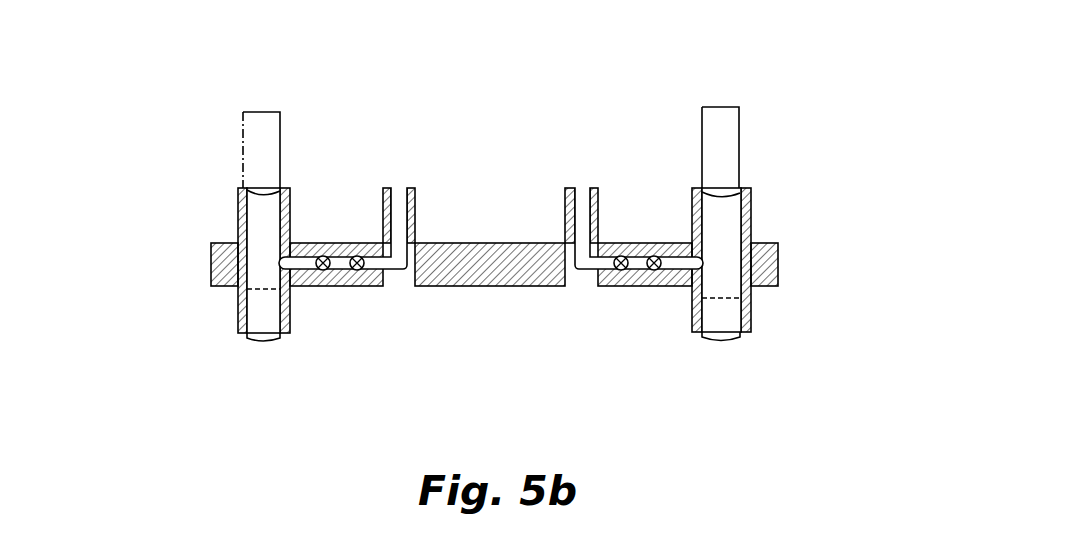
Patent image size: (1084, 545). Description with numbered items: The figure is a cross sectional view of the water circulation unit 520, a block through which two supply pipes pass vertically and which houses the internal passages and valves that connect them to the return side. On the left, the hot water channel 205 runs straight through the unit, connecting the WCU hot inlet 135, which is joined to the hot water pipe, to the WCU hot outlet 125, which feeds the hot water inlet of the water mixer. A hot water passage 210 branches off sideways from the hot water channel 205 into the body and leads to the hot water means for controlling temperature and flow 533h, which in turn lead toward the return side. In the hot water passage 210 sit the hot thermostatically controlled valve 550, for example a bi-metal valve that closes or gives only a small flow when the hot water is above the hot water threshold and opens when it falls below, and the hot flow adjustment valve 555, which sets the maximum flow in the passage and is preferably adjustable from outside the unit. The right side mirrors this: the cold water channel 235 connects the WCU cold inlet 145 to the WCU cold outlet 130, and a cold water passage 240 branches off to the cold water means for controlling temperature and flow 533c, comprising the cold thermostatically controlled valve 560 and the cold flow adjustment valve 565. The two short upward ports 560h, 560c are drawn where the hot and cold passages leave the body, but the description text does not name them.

The water circulation unit 520 is at (172, 123).
The WCU hot outlet 125 is at (238, 321).
The WCU hot inlet 135 is at (238, 213).
The hot water channel 205 is at (270, 197).
The hot water passage 210 is at (292, 286).
The cold water passage 240 is at (688, 286).
The WCU cold outlet 130 is at (752, 320).
The WCU cold inlet 145 is at (752, 204).
The cold water channel 235 is at (720, 183).
The hot water means for controlling temperature and flow 533h is at (332, 243).
The cold water means for controlling temperature and flow 533c is at (627, 244).
The hot water outlet 560h is at (417, 206).
The cold water outlet 560c is at (563, 207).
The hot thermostatically controlled valve 550 is at (331, 286).
The hot flow adjustment valve 555 is at (354, 287).
The cold flow adjustment valve 565 is at (630, 286).
The cold thermostatically controlled valve 560 is at (655, 286).